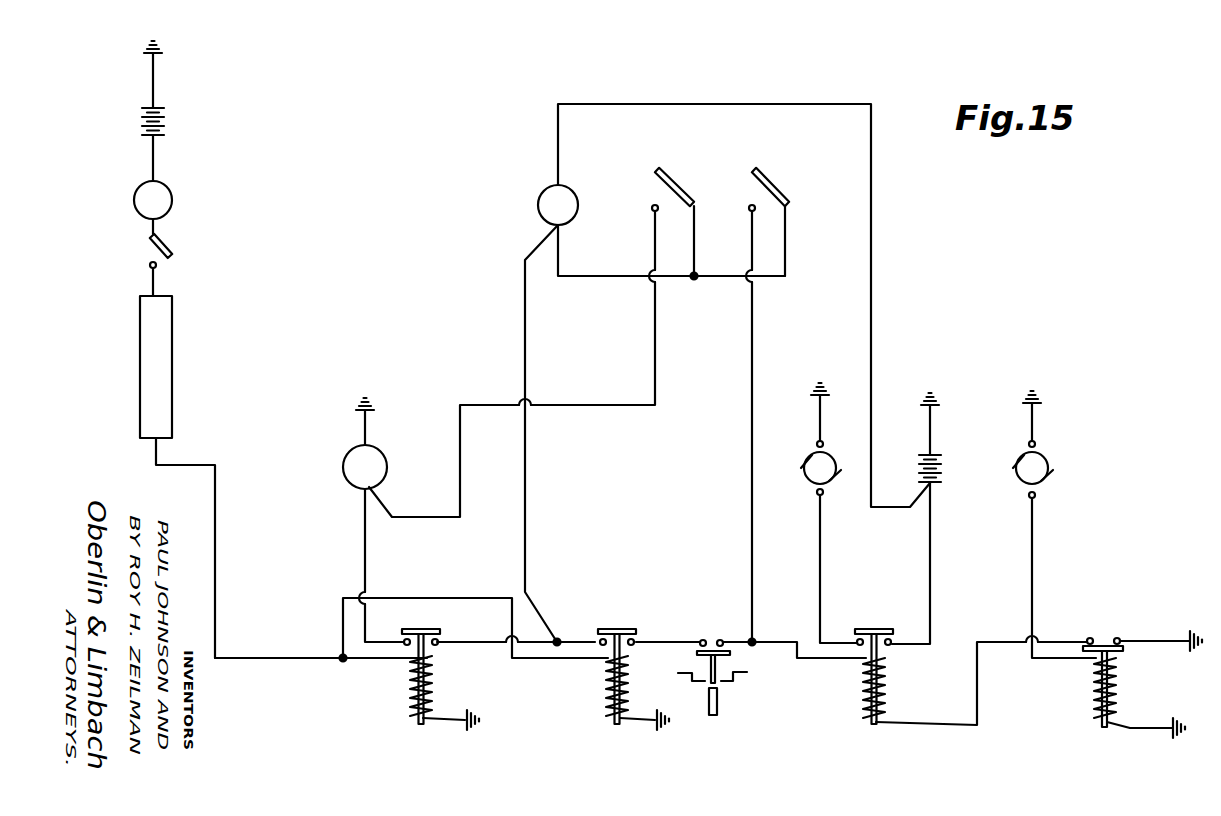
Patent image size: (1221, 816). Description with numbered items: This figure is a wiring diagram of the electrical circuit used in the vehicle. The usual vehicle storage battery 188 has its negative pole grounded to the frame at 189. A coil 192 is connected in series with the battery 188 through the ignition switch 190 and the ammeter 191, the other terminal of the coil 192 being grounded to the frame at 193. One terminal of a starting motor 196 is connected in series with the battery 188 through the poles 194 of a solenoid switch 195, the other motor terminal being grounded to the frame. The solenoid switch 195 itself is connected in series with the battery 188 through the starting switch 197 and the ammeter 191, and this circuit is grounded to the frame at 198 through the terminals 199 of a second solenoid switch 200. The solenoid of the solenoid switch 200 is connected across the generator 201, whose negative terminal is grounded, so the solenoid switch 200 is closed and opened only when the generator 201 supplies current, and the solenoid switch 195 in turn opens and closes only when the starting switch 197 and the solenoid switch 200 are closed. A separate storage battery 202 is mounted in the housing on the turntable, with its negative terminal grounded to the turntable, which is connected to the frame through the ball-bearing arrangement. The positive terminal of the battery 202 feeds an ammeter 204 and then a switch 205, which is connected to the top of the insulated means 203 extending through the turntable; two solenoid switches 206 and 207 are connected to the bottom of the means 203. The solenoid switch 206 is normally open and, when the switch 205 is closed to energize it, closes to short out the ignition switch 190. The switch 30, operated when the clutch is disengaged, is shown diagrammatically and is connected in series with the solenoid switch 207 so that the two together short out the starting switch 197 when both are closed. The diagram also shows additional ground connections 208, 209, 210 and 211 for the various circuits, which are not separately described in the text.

The switch 30 is at (737, 676).
The storage battery 188 is at (940, 470).
The ground 189 is at (935, 390).
The ignition switch 190 is at (666, 168).
The ammeter 191 is at (538, 200).
The coil 192 is at (343, 468).
The ground 193 is at (372, 401).
The poles of solenoid switch 194 is at (857, 651).
The solenoid switch 195 is at (868, 700).
The starting motor 196 is at (808, 479).
The starting switch 197 is at (770, 168).
The ground 198 is at (1188, 632).
The terminals of solenoid switch 199 is at (1088, 636).
The solenoid switch 200 is at (1096, 708).
The generator 201 is at (1048, 462).
The storage battery 202 is at (166, 131).
The insulated means 203 is at (146, 372).
The ammeter 204 is at (137, 194).
The switch 205 is at (175, 249).
The solenoid switch 206 is at (412, 690).
The solenoid switch 207 is at (606, 690).
The ground 208 is at (829, 369).
The ground 209 is at (473, 734).
The ground 210 is at (663, 734).
The ground 211 is at (149, 43).